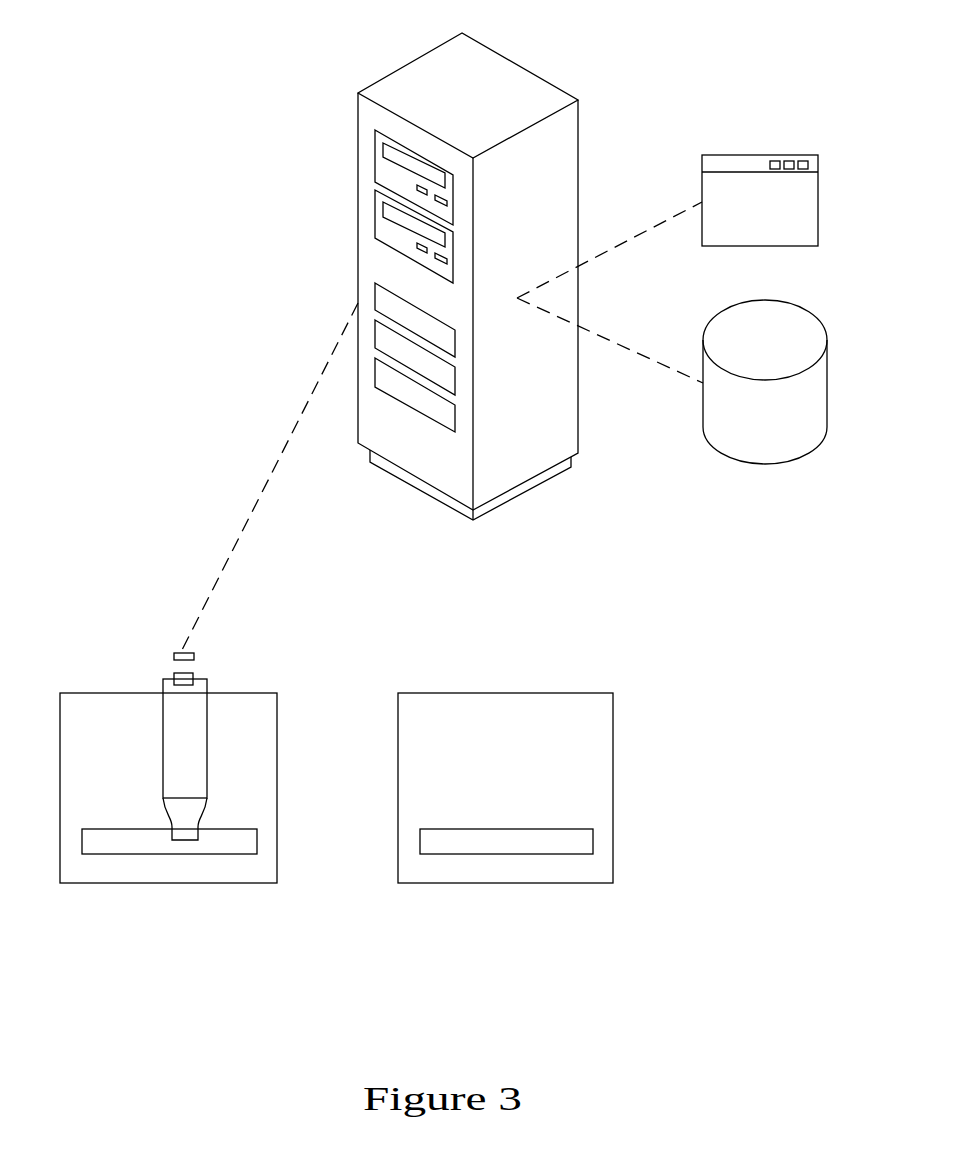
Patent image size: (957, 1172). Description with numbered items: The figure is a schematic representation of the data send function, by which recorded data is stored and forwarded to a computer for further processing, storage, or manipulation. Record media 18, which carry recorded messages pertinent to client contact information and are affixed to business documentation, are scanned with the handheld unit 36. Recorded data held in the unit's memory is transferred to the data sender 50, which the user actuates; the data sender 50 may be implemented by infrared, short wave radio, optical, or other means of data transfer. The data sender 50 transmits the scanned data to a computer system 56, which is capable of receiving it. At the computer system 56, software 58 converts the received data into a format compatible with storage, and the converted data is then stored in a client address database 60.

The record media 18 is at (222, 840).
The handheld unit 36 is at (190, 742).
The data sender 50 is at (178, 673).
The computer system 56 is at (500, 87).
The software 58 is at (760, 200).
The client address database 60 is at (765, 382).